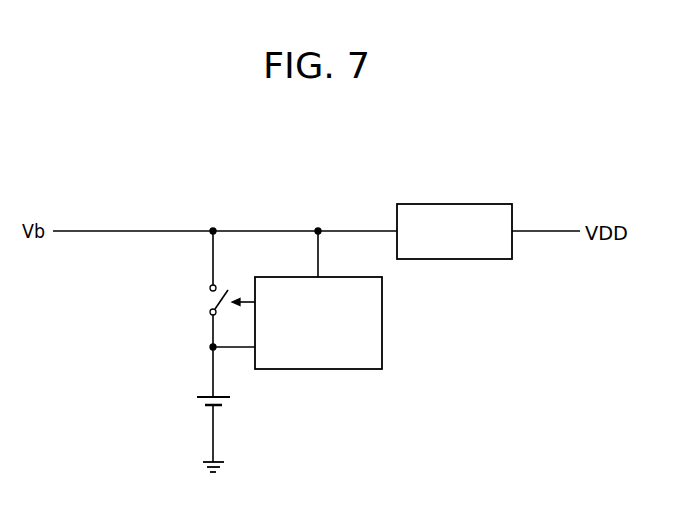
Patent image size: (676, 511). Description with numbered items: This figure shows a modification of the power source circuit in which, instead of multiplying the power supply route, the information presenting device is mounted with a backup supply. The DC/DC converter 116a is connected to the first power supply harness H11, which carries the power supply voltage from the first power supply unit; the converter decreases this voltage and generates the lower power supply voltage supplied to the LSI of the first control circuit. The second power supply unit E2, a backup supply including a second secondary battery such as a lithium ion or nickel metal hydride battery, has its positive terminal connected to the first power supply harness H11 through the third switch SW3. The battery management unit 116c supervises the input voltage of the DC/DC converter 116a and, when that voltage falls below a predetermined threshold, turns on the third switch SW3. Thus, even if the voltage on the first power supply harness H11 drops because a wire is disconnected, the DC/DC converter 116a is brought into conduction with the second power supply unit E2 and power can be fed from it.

The first power supply harness H11 is at (77, 231).
The third switch SW3 is at (196, 289).
The second power supply unit E2 is at (228, 404).
The DC/DC converter 116a is at (478, 204).
The battery management unit 116c is at (350, 278).